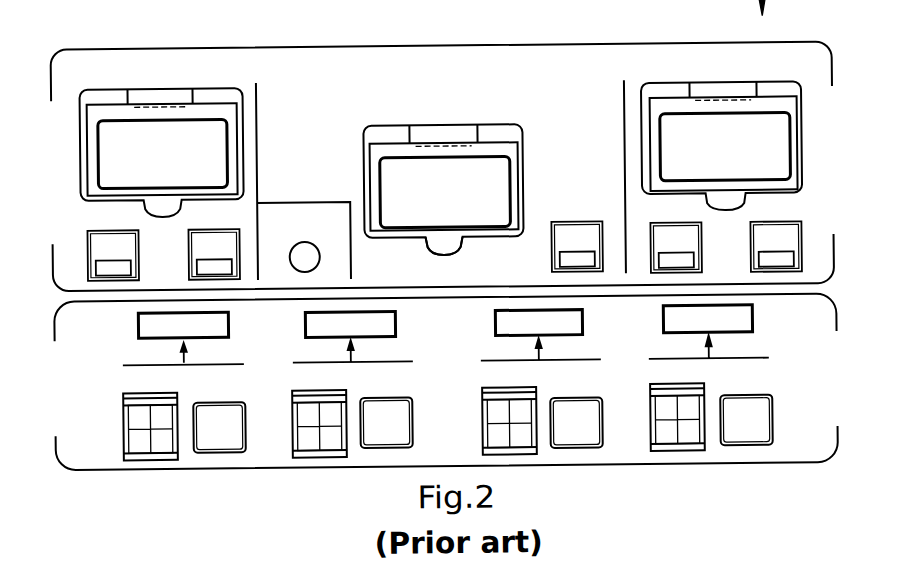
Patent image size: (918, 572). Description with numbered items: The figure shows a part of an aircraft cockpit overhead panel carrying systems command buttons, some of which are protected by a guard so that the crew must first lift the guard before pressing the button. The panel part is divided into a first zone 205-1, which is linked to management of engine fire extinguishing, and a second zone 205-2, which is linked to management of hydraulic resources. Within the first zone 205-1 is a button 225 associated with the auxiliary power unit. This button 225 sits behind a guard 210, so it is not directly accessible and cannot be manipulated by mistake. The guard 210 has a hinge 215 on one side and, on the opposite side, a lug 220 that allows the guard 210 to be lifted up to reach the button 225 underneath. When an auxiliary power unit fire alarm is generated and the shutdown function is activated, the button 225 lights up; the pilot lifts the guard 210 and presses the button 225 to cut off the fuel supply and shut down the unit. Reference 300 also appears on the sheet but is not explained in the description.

The first zone 205-1 is at (63, 43).
The second zone 205-2 is at (56, 466).
The guard 210 is at (512, 185).
The hinge 215 is at (456, 146).
The lug 220 is at (449, 244).
The button 225 is at (405, 181).
The panel element 300 is at (713, 571).